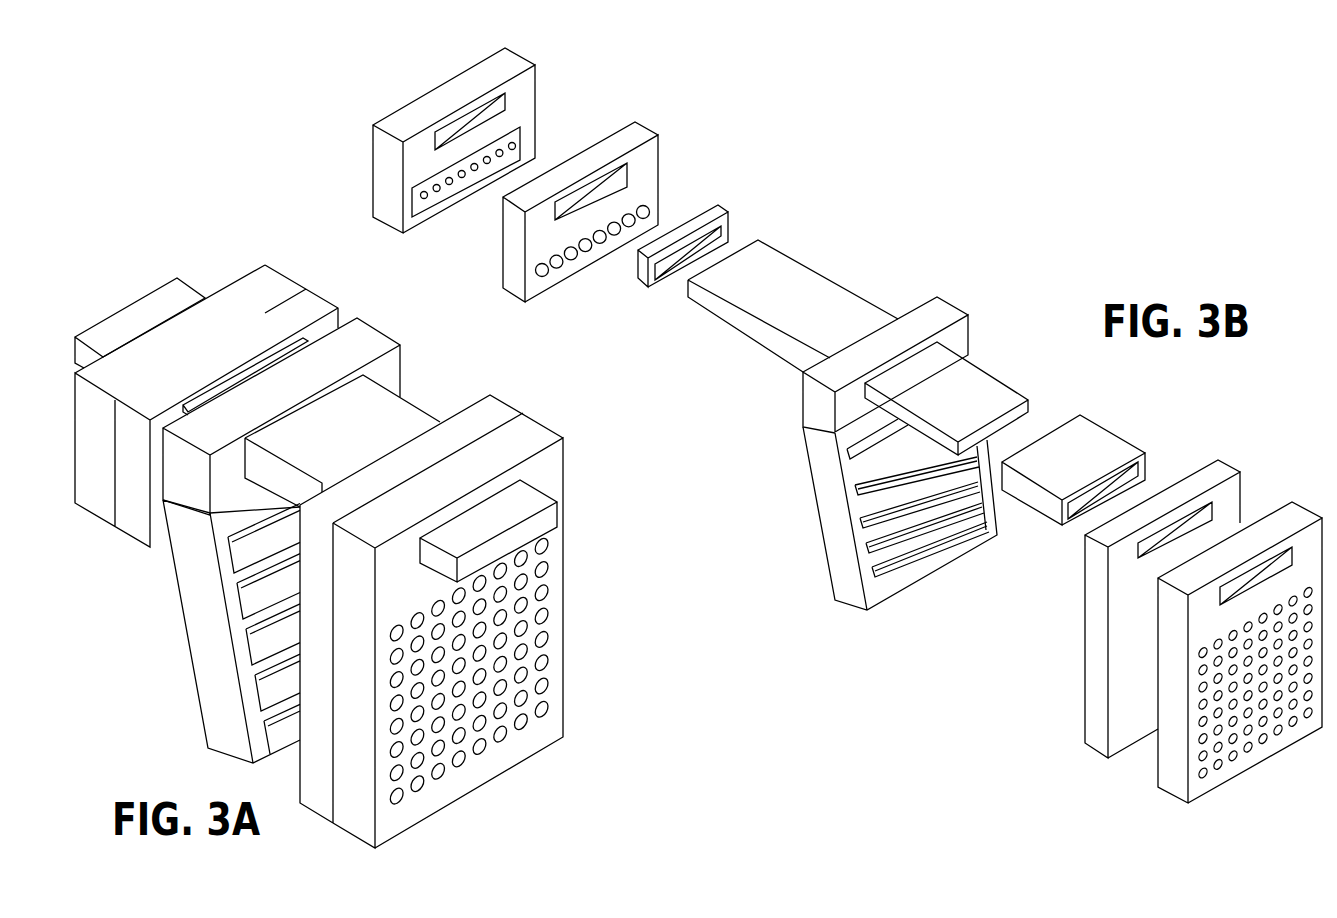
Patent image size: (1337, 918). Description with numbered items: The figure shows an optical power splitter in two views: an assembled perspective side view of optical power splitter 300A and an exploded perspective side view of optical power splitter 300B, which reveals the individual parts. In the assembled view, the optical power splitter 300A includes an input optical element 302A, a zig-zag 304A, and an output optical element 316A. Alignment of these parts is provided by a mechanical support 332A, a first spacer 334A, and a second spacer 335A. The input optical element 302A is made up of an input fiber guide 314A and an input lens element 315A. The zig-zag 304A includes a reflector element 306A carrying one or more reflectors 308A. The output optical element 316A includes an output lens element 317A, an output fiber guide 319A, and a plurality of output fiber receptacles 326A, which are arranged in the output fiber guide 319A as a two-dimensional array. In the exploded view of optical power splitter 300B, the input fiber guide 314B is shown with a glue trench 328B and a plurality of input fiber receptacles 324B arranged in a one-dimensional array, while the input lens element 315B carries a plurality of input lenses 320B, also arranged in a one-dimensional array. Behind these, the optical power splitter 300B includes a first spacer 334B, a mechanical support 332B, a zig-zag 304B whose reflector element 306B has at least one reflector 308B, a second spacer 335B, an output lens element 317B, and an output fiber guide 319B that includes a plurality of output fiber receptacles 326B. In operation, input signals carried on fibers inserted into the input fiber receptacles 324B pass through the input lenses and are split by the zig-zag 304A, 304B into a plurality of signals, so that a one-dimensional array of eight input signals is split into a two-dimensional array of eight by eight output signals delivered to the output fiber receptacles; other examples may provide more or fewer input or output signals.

In FIG. 3A, the optical power splitter 300A is at (190, 206).
In FIG. 3A, the input optical element 302A is at (109, 549).
In FIG. 3A, the mechanical support 332A is at (197, 288).
In FIG. 3A, the input fiber guide 314A is at (277, 272).
In FIG. 3A, the input lens element 315A is at (323, 300).
In FIG. 3A, the zig-zag 304A is at (377, 315).
In FIG. 3A, the first spacer 334A is at (242, 368).
In FIG. 3A, the second spacer 335A is at (433, 410).
In FIG. 3A, the reflector element 306A is at (187, 702).
In FIG. 3A, the reflectors 308A is at (238, 617).
In FIG. 3A, the output optical element 316A is at (581, 550).
In FIG. 3A, the output lens element 317A is at (503, 403).
In FIG. 3A, the output fiber guide 319A is at (552, 427).
In FIG. 3A, the output fiber receptacles 326A is at (548, 713).
In FIG. 3B, the optical power splitter 300B is at (985, 237).
In FIG. 3B, the input fiber guide 314B is at (537, 87).
In FIG. 3B, the glue trench 328B is at (433, 197).
In FIG. 3B, the input fiber receptacles 324B is at (470, 160).
In FIG. 3B, the input lens element 315B is at (662, 148).
In FIG. 3B, the input lenses 320B is at (577, 262).
In FIG. 3B, the first spacer 334B is at (730, 223).
In FIG. 3B, the mechanical support 332B is at (758, 342).
In FIG. 3B, the zig-zag 304B is at (970, 340).
In FIG. 3B, the reflector element 306B is at (812, 568).
In FIG. 3B, the reflector 308B is at (853, 507).
In FIG. 3B, the second spacer 335B is at (1110, 431).
In FIG. 3B, the output lens element 317B is at (1228, 462).
In FIG. 3B, the output fiber guide 319B is at (1173, 798).
In FIG. 3B, the output fiber receptacles 326B is at (1220, 770).